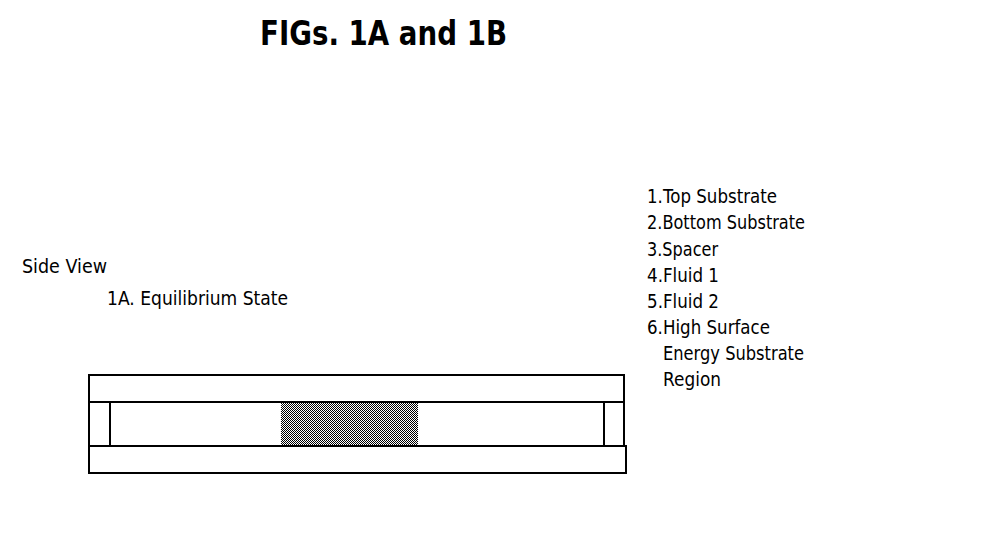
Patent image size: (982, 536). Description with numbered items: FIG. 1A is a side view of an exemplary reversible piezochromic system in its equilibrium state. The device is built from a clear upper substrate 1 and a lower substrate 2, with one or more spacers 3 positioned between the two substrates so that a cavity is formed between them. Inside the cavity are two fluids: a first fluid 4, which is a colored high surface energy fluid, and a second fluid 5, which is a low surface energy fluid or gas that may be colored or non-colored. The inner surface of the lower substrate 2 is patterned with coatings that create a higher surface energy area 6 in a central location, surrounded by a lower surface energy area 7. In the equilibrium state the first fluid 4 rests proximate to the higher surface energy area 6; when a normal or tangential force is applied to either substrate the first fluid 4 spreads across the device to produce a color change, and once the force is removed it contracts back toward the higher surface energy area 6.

The upper substrate 1 is at (150, 375).
The lower substrate 2 is at (148, 473).
The spacer 3 is at (89, 438).
The first fluid 4 is at (332, 430).
The second fluid 5 is at (216, 424).
The higher surface energy area 6 is at (360, 447).
The lower surface energy area 7 is at (217, 448).